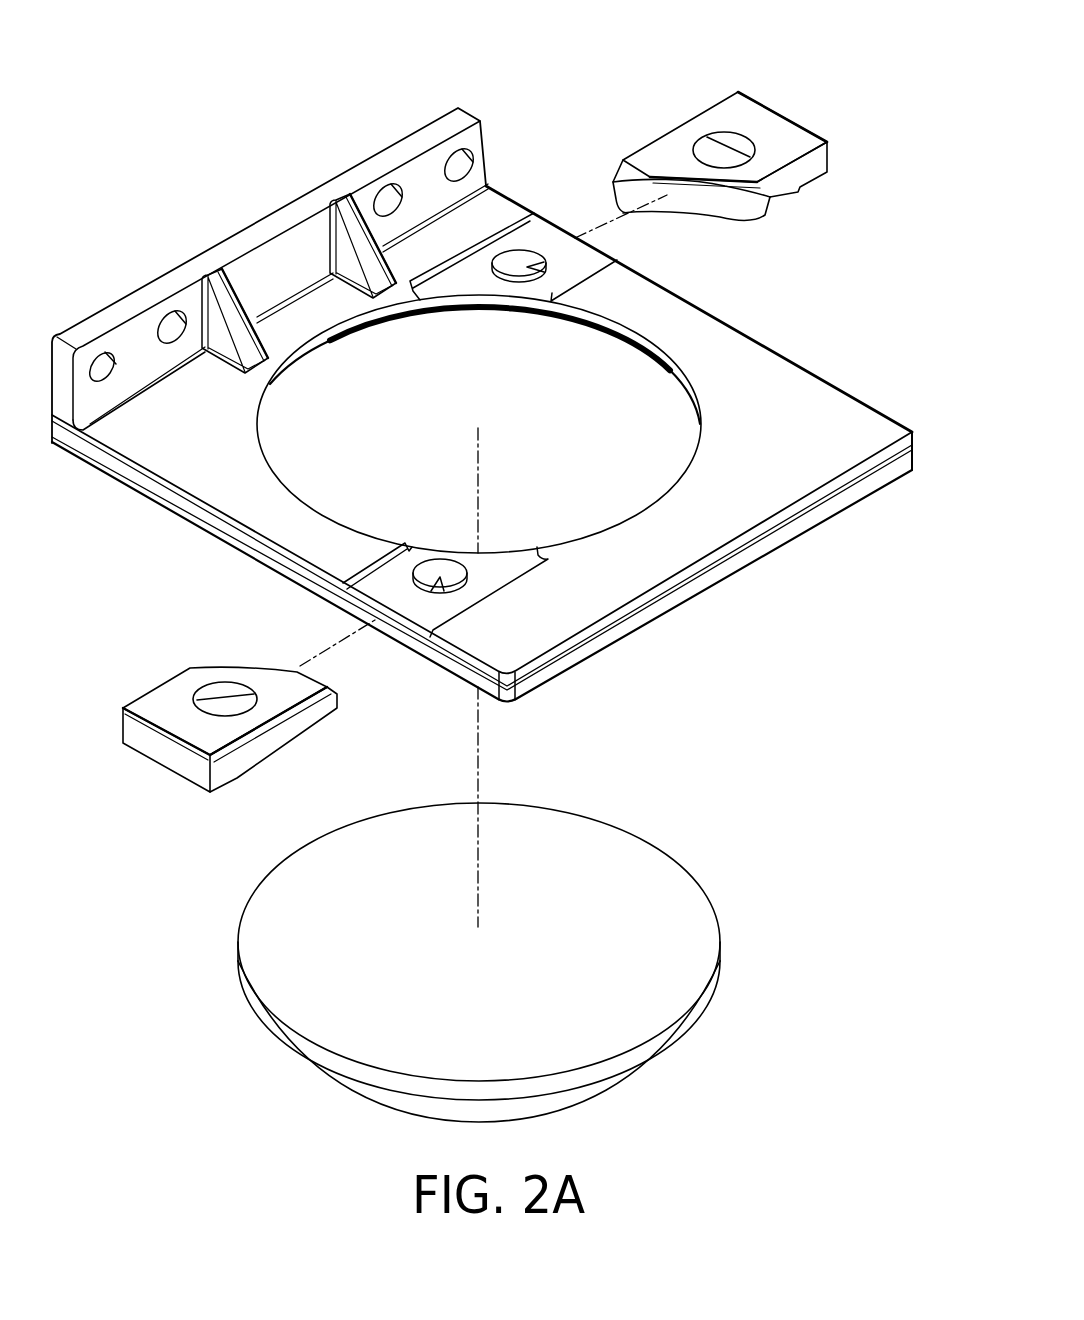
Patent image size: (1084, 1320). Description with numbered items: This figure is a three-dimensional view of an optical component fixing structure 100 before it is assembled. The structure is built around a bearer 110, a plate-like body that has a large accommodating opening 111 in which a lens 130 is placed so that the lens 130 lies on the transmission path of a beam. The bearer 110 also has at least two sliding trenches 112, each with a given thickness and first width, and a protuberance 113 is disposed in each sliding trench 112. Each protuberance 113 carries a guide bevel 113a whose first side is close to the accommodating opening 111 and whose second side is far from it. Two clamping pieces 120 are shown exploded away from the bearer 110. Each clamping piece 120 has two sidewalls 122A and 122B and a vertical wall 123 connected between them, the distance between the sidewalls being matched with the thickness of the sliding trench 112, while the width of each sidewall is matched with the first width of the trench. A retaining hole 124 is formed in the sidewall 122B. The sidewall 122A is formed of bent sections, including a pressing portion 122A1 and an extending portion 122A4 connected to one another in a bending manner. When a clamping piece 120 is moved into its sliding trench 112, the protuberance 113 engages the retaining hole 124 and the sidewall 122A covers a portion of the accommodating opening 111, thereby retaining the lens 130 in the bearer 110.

The optical component fixing structure 100 is at (200, 190).
The bearer 110 is at (499, 493).
The accommodating opening 111 is at (652, 400).
The sliding trench 112 is at (528, 236).
The protuberance 113 is at (587, 397).
The guide bevel 113a is at (546, 267).
The clamping piece 120 is at (497, 450).
The sidewall 122A is at (580, 485).
The pressing portion 122A1 is at (753, 212).
The extending portion 122A4 is at (270, 738).
The sidewall 122B is at (666, 146).
The vertical wall 123 is at (822, 158).
The retaining hole 124 is at (747, 133).
The lens 130 is at (744, 883).